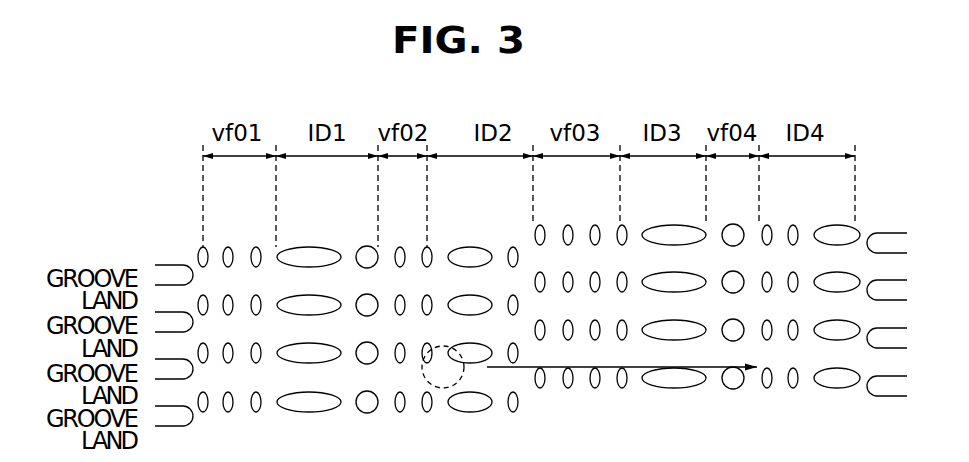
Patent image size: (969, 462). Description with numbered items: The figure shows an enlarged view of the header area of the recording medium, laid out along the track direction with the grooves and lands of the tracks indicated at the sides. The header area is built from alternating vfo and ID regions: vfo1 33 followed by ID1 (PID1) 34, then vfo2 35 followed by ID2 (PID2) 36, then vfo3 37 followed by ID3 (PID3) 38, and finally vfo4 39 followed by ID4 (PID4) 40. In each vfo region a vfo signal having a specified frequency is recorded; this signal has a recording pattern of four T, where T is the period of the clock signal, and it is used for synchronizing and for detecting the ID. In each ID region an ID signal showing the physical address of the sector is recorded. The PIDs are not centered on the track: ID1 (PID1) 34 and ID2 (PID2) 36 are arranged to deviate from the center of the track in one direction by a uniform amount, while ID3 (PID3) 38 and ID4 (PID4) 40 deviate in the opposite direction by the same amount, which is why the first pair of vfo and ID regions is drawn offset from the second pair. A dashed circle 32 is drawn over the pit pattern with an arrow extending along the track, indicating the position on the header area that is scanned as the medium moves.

The light beam spot 32 is at (443, 391).
The vfo1 33 is at (234, 218).
The ID1 (PID1) 34 is at (324, 218).
The vfo2 35 is at (399, 218).
The ID2 (PID2) 36 is at (476, 218).
The vfo3 37 is at (578, 218).
The ID3 (PID3) 38 is at (669, 218).
The vfo4 39 is at (739, 218).
The ID4 (PID4) 40 is at (809, 218).